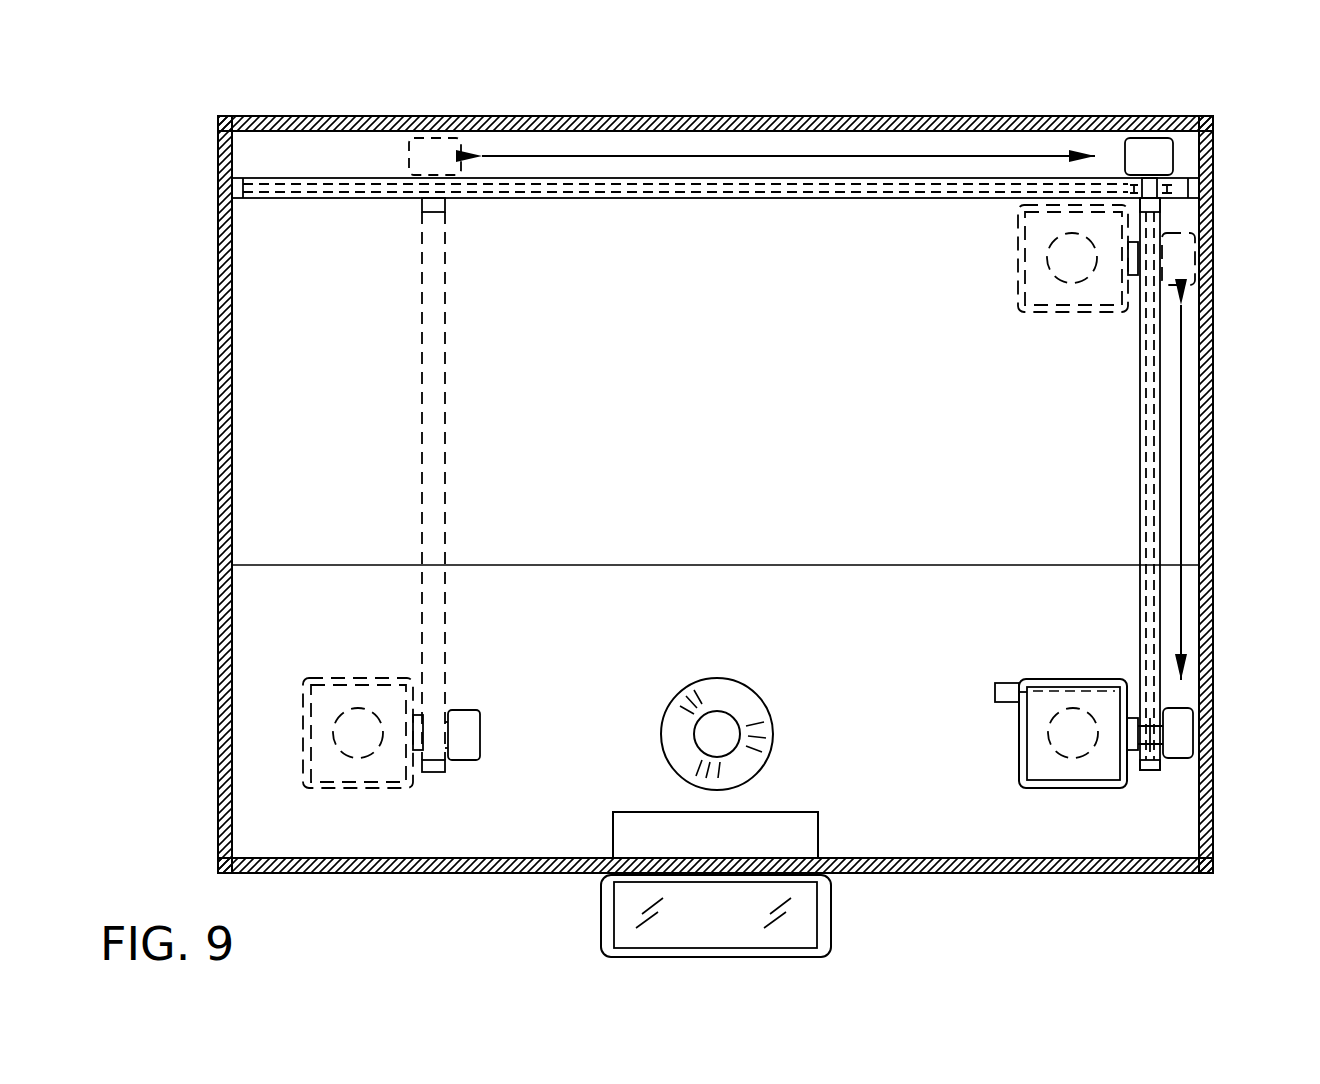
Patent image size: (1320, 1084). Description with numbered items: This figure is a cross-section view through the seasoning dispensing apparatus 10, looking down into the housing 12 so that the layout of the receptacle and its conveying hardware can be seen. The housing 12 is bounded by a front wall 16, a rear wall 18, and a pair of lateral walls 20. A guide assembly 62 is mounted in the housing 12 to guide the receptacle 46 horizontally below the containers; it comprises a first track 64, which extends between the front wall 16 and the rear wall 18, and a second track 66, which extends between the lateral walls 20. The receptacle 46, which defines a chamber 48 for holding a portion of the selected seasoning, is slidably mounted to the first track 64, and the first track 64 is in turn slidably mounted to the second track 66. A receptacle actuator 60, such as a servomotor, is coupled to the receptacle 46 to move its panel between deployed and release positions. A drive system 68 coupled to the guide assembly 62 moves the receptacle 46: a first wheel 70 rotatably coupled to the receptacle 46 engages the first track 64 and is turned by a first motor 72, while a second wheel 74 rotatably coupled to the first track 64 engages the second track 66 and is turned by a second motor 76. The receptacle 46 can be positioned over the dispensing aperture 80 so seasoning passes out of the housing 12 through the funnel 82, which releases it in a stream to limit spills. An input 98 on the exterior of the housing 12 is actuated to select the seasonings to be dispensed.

The seasoning dispensing apparatus 10 is at (188, 156).
The housing 12 is at (292, 108).
The front wall 16 is at (387, 873).
The rear wall 18 is at (535, 117).
The lateral walls 20 is at (218, 292).
The receptacle 46 is at (1020, 765).
The chamber 48 is at (1097, 762).
The receptacle actuator 60 is at (1000, 703).
The guide assembly 62 is at (785, 168).
The first track 64 is at (1157, 432).
The second track 66 is at (897, 183).
The drive system 68 is at (1180, 103).
The first wheel 70 is at (1165, 745).
The first motor 72 is at (1185, 732).
The second wheel 74 is at (1155, 174).
The second motor 76 is at (1147, 155).
The dispensing aperture 80 is at (708, 732).
The funnel 82 is at (680, 713).
The input 98 is at (807, 920).